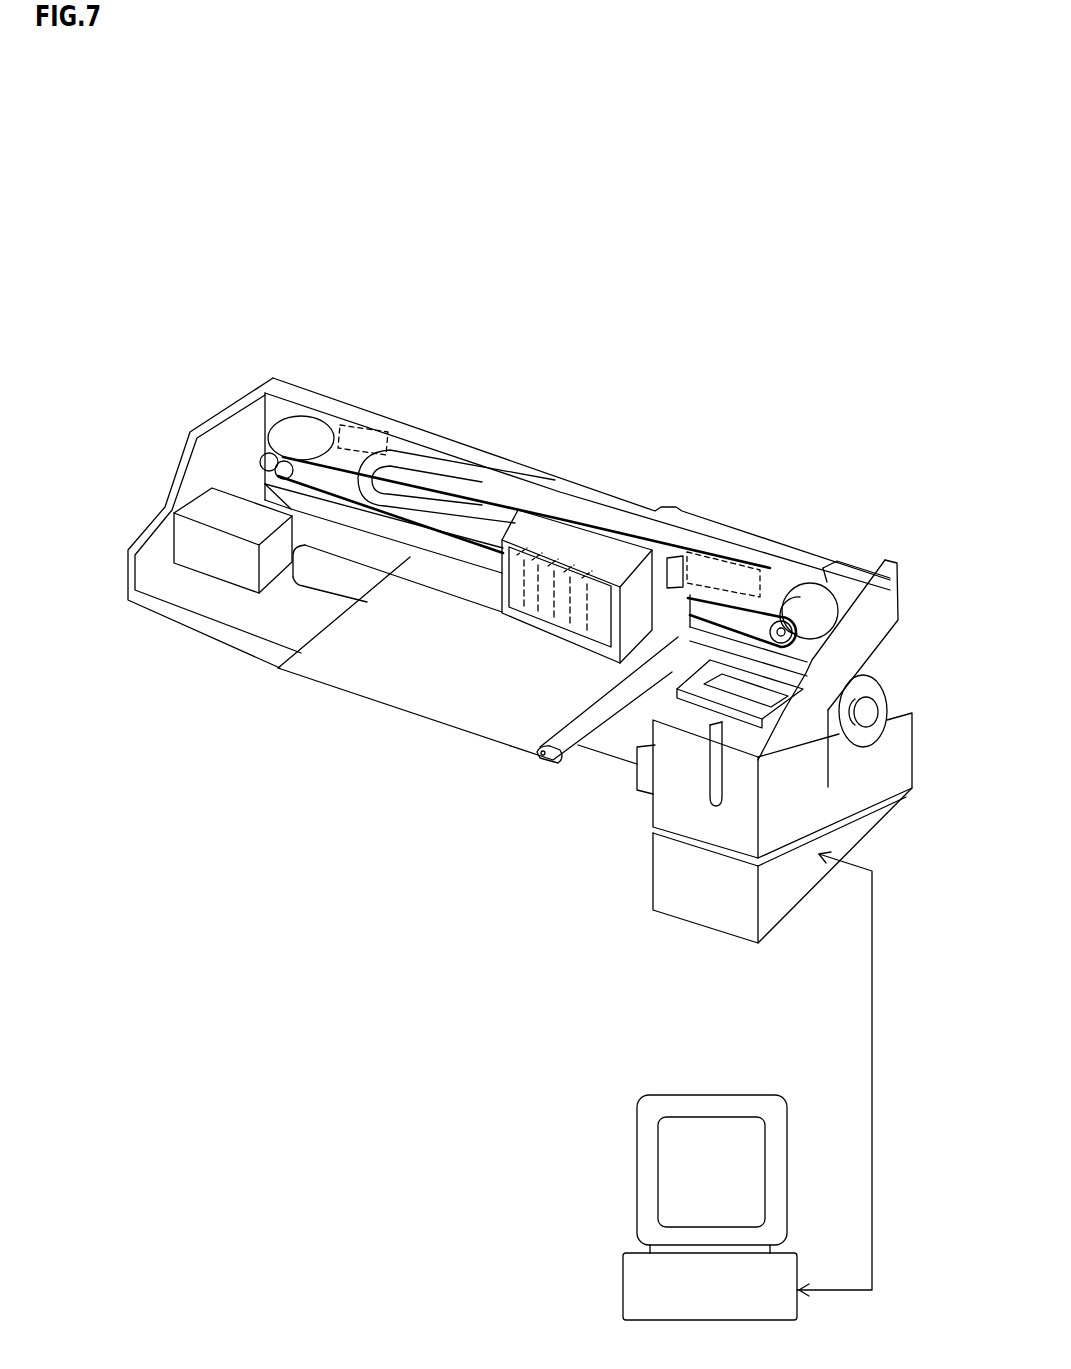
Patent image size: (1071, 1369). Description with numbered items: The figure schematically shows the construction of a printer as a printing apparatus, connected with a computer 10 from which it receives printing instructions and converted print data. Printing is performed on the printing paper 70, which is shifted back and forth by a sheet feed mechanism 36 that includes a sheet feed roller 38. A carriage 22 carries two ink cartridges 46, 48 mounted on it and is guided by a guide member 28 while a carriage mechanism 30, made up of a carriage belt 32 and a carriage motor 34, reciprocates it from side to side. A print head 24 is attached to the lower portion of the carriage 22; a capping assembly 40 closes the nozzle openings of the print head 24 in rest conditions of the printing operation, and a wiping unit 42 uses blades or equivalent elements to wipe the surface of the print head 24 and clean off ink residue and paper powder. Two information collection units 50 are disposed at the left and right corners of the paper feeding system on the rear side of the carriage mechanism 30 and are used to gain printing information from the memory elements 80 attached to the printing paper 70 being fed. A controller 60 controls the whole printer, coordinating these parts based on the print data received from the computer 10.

The computer 10 is at (640, 1122).
The carriage 22 is at (583, 642).
The print head 24 is at (550, 750).
The guide member 28 is at (332, 508).
The carriage mechanism 30 is at (917, 462).
The carriage belt 32 is at (758, 602).
The carriage motor 34 is at (837, 558).
The sheet feed mechanism 36 is at (98, 725).
The sheet feed roller 38 is at (332, 573).
The capping assembly 40 is at (730, 683).
The wiping unit 42 is at (705, 670).
The ink cartridge 46 is at (573, 547).
The ink cartridge 48 is at (628, 560).
The information collection unit 50 is at (388, 425).
The controller 60 is at (697, 923).
The printing paper 70 is at (352, 675).
The memory element 80 is at (558, 764).